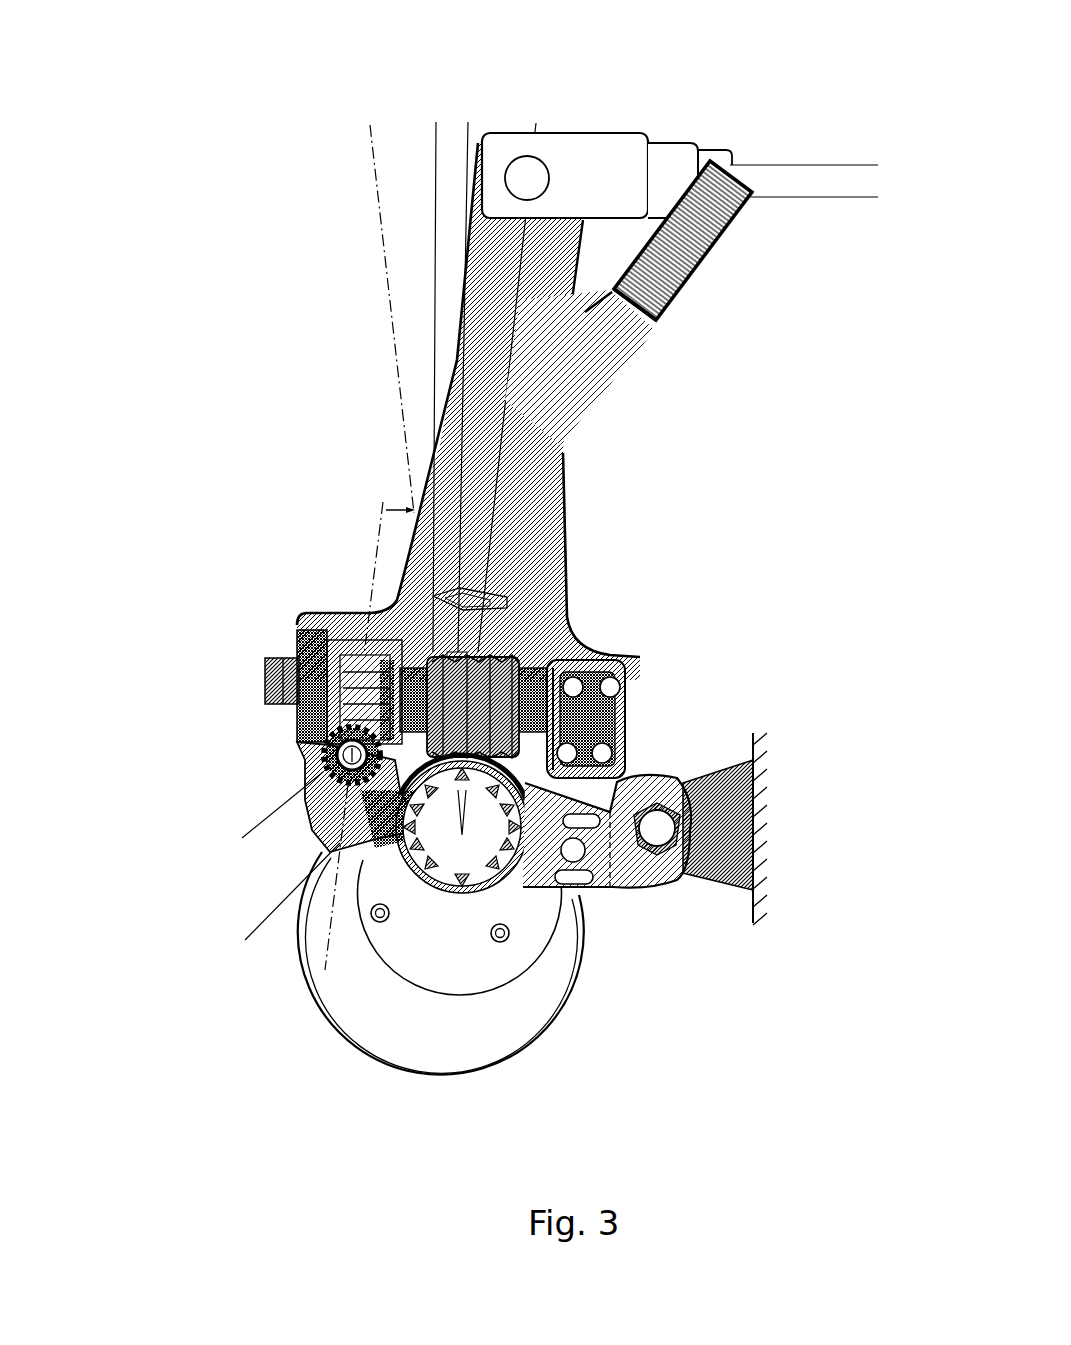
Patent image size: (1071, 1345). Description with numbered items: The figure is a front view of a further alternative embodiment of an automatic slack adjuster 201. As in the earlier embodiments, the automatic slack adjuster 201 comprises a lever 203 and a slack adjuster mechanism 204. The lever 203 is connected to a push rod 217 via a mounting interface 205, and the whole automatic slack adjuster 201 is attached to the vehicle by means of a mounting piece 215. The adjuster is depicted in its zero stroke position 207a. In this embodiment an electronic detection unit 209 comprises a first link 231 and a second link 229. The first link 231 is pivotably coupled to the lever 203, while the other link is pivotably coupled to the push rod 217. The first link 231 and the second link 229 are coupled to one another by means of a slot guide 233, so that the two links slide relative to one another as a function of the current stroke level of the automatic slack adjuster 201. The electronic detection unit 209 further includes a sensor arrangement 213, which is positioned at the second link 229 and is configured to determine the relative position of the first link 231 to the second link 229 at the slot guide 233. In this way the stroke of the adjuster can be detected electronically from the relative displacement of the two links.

The automatic slack adjuster 201 is at (158, 79).
The lever 203 is at (593, 625).
The slack adjuster mechanism 204 is at (279, 608).
The mounting interface 205 is at (512, 178).
The zero stroke position 207a is at (447, 153).
The electronic detection unit 209 is at (690, 344).
The sensor arrangement 213 is at (651, 366).
The mounting piece 215 is at (631, 870).
The push rod 217 is at (612, 180).
The second link 229 is at (708, 300).
The first link 231 is at (573, 447).
The slot guide 233 is at (587, 272).